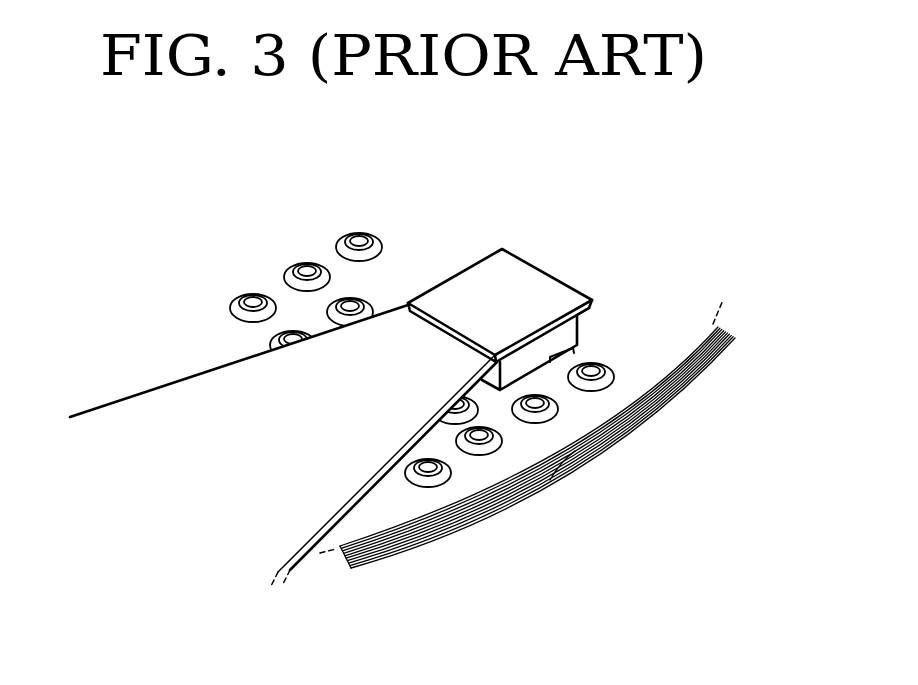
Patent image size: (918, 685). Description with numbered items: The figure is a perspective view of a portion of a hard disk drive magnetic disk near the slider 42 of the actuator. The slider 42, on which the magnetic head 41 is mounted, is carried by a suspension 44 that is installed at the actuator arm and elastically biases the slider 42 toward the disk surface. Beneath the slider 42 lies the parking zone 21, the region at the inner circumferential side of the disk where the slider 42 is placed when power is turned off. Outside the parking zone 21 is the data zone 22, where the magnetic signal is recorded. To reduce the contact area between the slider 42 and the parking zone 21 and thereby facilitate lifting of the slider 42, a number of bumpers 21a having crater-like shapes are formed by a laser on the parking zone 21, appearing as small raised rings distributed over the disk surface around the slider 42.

The parking zone 21 is at (385, 507).
The bumpers 21a is at (242, 293).
The data zone 22 is at (575, 451).
The magnetic head 41 is at (577, 355).
The slider 42 is at (568, 332).
The suspension 44 is at (163, 410).